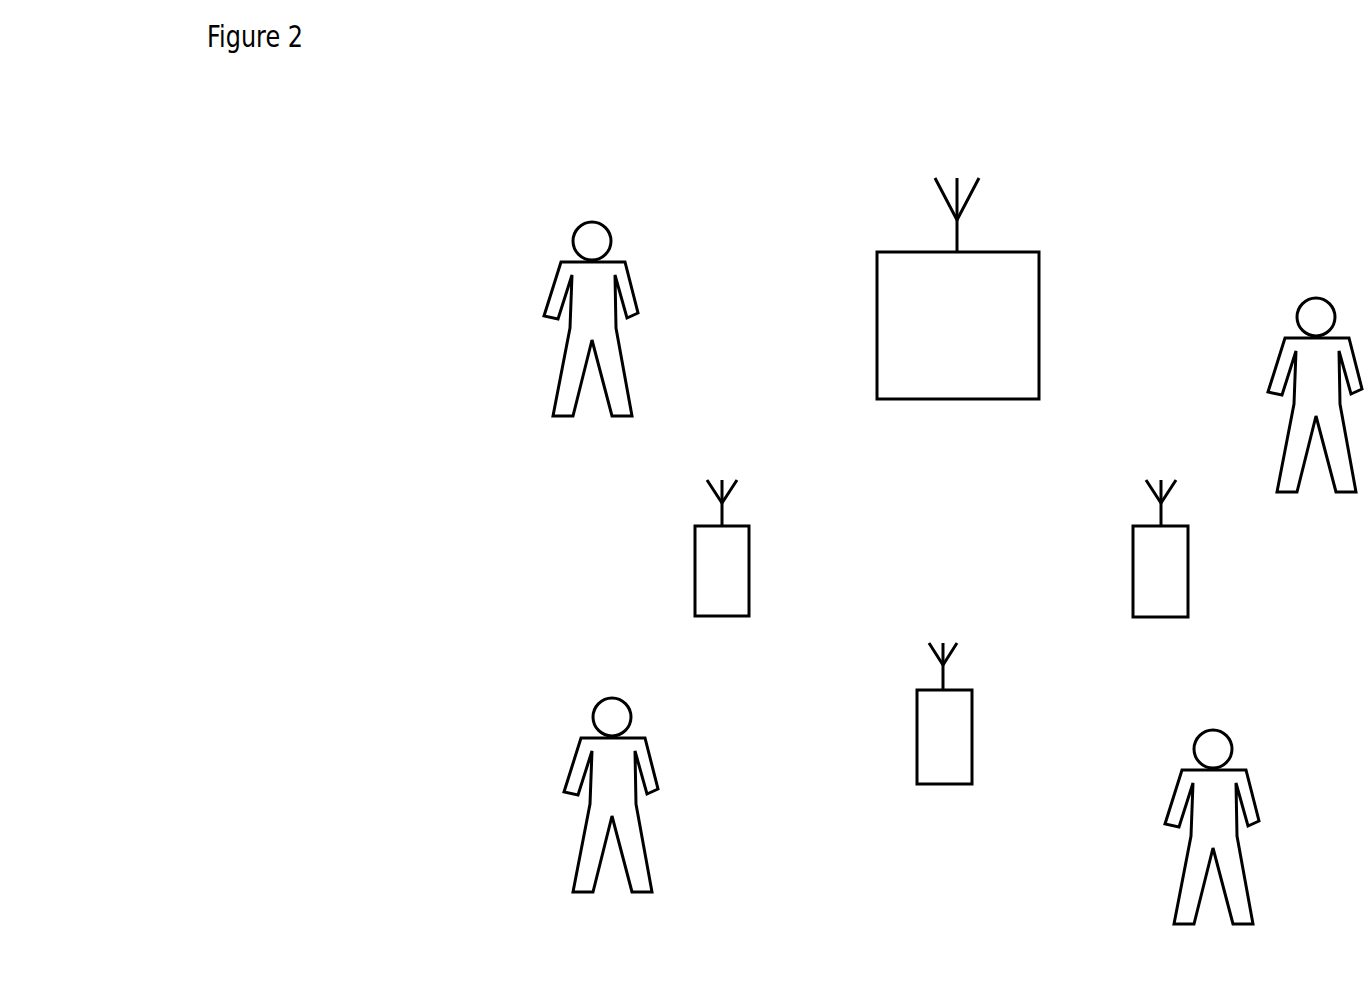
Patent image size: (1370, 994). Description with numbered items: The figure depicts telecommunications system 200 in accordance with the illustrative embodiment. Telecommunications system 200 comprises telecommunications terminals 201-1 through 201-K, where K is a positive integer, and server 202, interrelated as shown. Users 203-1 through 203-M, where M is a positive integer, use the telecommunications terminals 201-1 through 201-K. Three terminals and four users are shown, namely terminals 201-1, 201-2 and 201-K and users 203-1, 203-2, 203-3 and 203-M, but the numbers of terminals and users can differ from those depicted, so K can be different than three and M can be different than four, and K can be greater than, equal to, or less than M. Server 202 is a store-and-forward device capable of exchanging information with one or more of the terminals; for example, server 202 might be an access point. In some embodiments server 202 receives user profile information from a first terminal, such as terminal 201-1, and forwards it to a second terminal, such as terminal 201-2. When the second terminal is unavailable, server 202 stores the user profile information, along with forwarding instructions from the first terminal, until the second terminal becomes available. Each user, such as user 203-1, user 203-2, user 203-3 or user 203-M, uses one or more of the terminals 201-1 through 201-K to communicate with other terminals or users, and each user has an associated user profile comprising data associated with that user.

The telecommunications system 200 is at (723, 138).
The telecommunications terminal 201-1 is at (661, 548).
The telecommunications terminal 201-2 is at (883, 713).
The telecommunications terminal 201-K is at (1098, 548).
The server 202 is at (908, 288).
The user 203-1 is at (1158, 827).
The user 203-2 is at (1261, 395).
The user 203-3 is at (537, 319).
The user 203-M is at (554, 795).